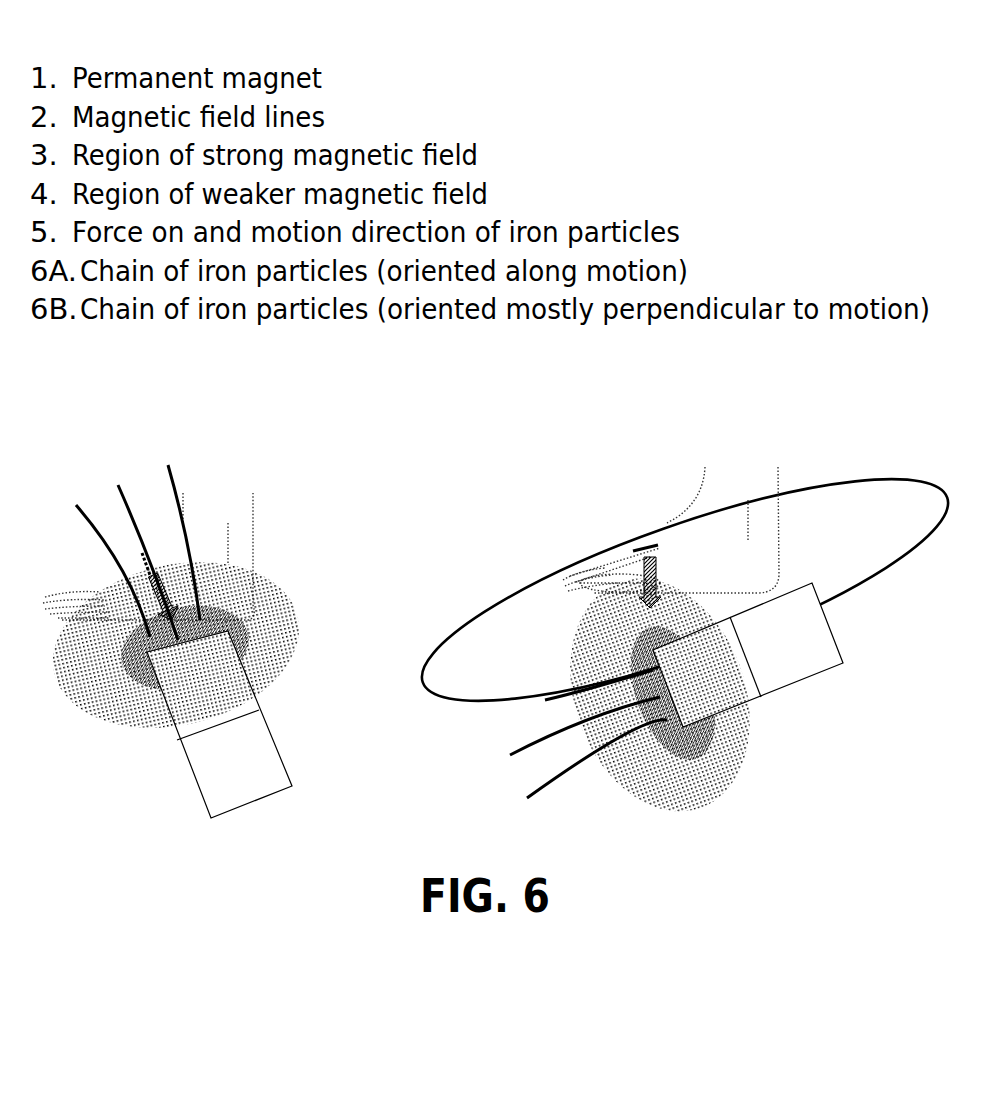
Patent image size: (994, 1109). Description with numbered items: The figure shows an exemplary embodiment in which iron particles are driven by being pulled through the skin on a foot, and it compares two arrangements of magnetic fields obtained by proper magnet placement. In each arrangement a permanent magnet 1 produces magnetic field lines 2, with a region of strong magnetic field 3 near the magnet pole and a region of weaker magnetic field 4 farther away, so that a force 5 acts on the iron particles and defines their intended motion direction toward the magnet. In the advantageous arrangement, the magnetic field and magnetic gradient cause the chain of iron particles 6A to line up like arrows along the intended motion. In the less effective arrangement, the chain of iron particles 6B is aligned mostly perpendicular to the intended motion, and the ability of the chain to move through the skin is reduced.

The permanent magnet 1 is at (183, 758).
The magnetic field lines 2 is at (76, 505).
The region of strong magnetic field 3 is at (257, 653).
The region of weaker magnetic field 4 is at (273, 583).
The force on and motion direction of iron particles 5 is at (583, 584).
The chain of iron particles (oriented along motion) 6A is at (45, 598).
The chain of iron particles (oriented mostly perpendicular to motion) 6B is at (644, 537).